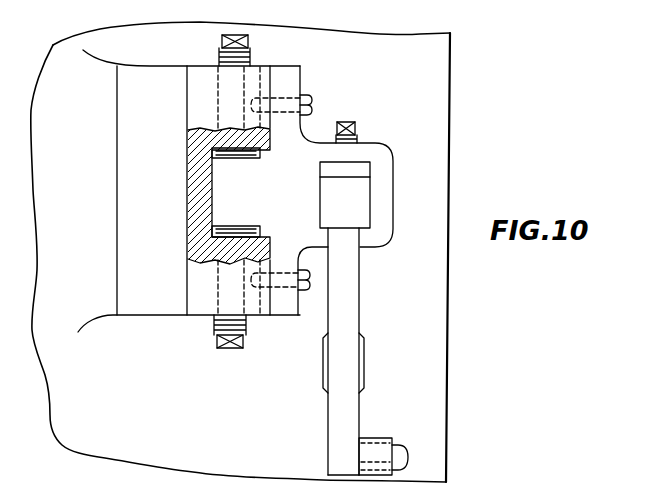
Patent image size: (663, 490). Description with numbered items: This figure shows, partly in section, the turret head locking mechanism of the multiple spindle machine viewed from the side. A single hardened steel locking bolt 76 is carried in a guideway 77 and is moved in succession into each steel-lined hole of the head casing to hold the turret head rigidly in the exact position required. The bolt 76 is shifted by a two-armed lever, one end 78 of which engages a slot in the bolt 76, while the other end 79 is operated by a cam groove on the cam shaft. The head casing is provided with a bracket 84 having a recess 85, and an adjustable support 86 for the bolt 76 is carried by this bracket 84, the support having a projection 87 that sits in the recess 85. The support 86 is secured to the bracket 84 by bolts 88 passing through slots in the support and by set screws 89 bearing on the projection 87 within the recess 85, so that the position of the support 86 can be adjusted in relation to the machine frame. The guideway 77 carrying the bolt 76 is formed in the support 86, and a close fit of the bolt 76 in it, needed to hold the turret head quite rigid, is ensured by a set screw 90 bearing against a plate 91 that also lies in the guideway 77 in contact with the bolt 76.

The bolt 76 is at (348, 198).
The guideway 77 is at (370, 188).
The end of two-armed lever 78 is at (343, 351).
The end of two-armed lever 79 is at (370, 456).
The bracket 84 is at (189, 191).
The recess 85 is at (252, 158).
The adjustable support 86 is at (305, 190).
The projection 87 is at (220, 180).
The bolts 88 is at (313, 110).
The set screws 89 is at (222, 39).
The set screw 90 is at (357, 128).
The plate 91 is at (355, 170).